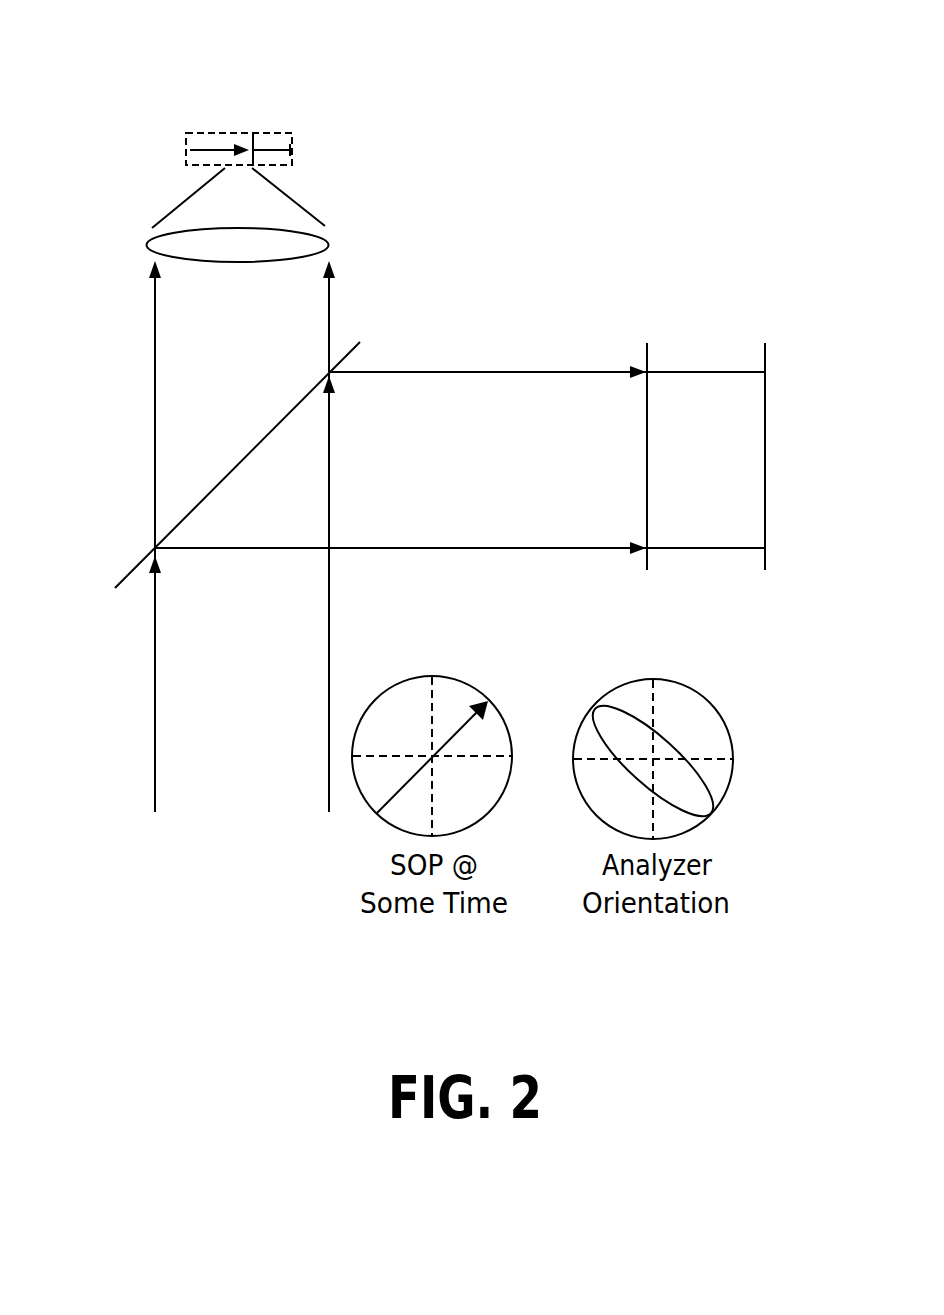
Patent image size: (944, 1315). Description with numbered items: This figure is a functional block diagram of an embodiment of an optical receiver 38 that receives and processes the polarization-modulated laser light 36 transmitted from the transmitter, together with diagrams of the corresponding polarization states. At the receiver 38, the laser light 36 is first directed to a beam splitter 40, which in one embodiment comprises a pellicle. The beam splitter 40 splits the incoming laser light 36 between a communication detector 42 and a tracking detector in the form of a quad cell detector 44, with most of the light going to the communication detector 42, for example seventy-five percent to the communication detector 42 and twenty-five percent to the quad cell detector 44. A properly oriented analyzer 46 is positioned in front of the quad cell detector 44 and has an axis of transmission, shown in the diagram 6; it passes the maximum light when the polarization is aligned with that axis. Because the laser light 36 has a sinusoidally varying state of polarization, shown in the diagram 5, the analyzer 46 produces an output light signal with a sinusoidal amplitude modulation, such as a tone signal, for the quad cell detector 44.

The optical receiver 38 is at (708, 144).
The communication detector 42 is at (140, 233).
The beam splitter 40 is at (134, 567).
The laser light 36 is at (219, 596).
The analyzer 46 is at (650, 355).
The quad cell detector 44 is at (768, 355).
The diagram of state of polarization 5 is at (637, 572).
The diagram of analyzer axis of transmission 6 is at (753, 572).